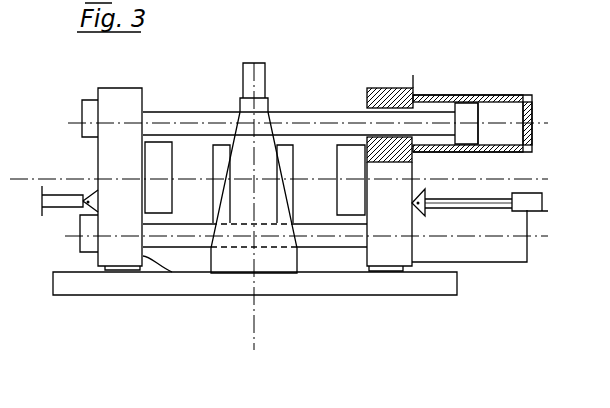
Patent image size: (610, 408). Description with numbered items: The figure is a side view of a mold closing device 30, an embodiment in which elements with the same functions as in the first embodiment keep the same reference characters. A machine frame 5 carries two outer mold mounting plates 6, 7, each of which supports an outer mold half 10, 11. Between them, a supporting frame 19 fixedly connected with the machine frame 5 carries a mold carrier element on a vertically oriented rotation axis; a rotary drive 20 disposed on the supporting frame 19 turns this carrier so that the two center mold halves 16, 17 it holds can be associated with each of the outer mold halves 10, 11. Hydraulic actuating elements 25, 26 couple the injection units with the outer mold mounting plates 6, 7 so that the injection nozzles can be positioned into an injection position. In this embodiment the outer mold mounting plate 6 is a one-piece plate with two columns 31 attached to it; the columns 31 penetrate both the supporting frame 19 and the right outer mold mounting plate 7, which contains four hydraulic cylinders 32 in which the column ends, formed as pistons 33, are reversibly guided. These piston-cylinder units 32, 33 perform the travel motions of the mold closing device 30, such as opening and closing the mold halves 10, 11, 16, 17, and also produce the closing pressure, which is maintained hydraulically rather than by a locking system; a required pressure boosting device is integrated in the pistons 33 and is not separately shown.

The machine frame 5 is at (298, 292).
The outer mold mounting plate 6 is at (122, 101).
The outer mold mounting plate 7 is at (388, 93).
The mold half 10 is at (172, 153).
The mold half 11 is at (338, 204).
The center mold half 16 is at (215, 198).
The center mold half 17 is at (289, 159).
The supporting frame 19 is at (290, 260).
The rotary drive 20 is at (259, 82).
The hydraulic actuating element 25 is at (54, 207).
The hydraulic actuating element 26 is at (533, 185).
The mold closing device 30 is at (329, 63).
The column 31 is at (165, 121).
The hydraulic cylinder 32 is at (503, 95).
The piston 33 is at (463, 118).